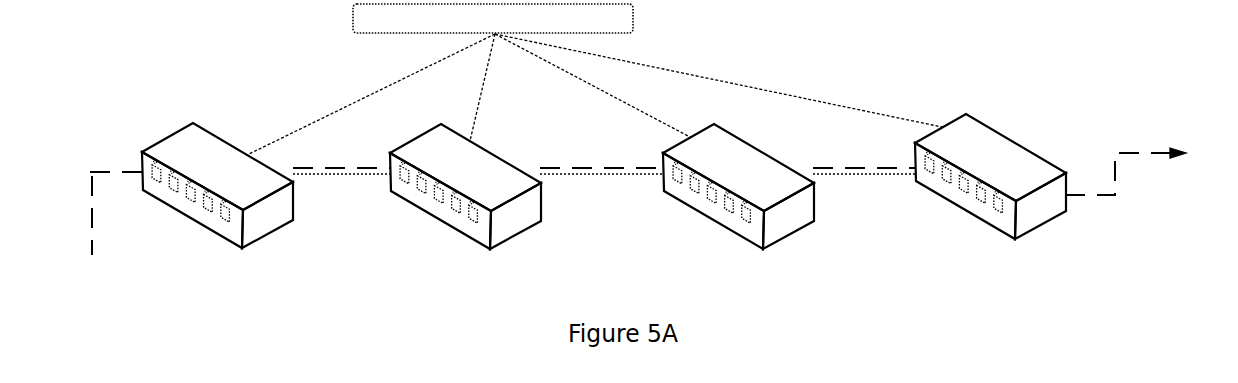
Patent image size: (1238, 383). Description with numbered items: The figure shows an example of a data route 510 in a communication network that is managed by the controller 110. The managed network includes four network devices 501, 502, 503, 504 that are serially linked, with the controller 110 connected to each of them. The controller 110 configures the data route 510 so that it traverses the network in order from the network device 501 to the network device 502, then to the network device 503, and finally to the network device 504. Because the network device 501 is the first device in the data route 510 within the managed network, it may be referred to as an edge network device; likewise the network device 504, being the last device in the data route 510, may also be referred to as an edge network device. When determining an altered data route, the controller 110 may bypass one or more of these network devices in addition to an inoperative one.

The controller 110 is at (630, 28).
The network device 501 is at (262, 232).
The network device 502 is at (510, 233).
The network device 503 is at (783, 233).
The network device 504 is at (1035, 223).
The data route 510 is at (1077, 34).